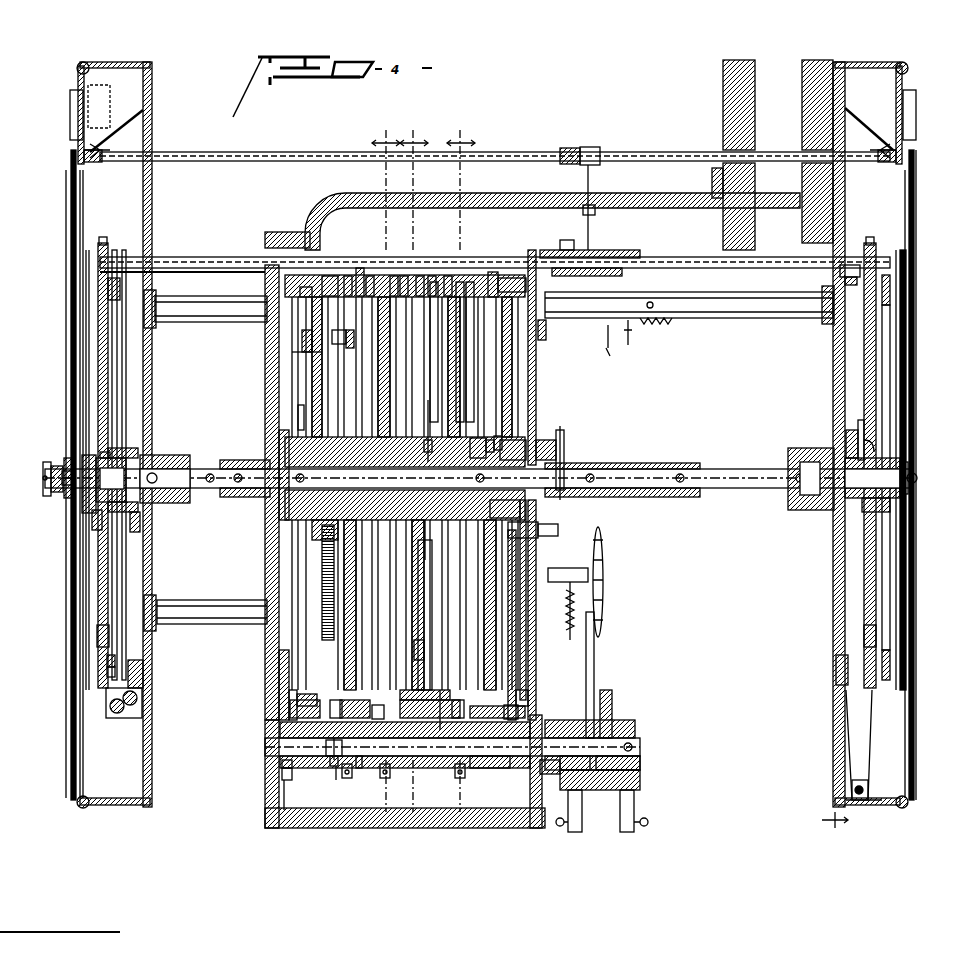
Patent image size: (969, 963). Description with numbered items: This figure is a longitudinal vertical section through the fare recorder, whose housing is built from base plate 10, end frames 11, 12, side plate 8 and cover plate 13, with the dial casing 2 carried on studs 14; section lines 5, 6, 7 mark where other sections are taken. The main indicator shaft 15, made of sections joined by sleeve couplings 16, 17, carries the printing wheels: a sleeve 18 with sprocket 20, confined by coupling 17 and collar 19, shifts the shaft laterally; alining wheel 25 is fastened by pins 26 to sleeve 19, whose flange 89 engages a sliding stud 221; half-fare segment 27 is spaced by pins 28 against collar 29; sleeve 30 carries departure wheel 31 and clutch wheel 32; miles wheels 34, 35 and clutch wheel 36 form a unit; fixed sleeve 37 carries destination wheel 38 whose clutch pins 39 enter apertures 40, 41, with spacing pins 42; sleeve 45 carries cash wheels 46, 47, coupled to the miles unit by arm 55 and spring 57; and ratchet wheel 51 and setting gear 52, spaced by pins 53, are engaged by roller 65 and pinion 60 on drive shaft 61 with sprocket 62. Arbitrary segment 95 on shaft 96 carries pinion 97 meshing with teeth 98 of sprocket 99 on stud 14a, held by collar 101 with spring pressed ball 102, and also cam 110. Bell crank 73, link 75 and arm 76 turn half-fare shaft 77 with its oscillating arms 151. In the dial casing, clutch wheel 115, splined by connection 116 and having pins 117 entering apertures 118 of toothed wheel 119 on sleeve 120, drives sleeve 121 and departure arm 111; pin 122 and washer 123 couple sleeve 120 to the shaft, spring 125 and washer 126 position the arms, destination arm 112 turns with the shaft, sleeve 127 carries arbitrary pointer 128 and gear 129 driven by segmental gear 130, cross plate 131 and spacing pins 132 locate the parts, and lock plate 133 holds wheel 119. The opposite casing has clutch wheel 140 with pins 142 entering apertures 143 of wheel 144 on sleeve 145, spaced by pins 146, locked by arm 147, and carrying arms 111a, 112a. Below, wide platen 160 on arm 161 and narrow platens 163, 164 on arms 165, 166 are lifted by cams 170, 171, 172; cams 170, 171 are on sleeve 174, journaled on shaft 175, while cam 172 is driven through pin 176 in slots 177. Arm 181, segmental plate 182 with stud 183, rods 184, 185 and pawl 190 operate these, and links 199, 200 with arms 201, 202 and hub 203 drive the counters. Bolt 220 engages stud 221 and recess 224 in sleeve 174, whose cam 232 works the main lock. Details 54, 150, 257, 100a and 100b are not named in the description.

The frame side member 2 is at (151, 728).
The section line 5 is at (465, 449).
The section line 6 is at (407, 453).
The section line 7 is at (361, 451).
The section line 8 is at (834, 836).
The base housing 10 is at (425, 812).
The housing left wall 11 is at (265, 355).
The housing right wall 12 is at (536, 368).
The tube 13 is at (540, 193).
The cross shaft 14 is at (236, 318).
The cross shaft 14a is at (760, 318).
The bearing block 15 is at (770, 465).
The main shaft 16 is at (226, 468).
The shaft sleeve 17 is at (674, 462).
The collar 18 is at (556, 448).
The collar 19 is at (476, 438).
The disc 20 is at (562, 440).
The plate 25 is at (492, 272).
The block 26 is at (505, 509).
The plate 27 is at (520, 625).
The collar 28 is at (514, 452).
The ring 29 is at (504, 436).
The plate 30 is at (426, 570).
The disc 31 is at (448, 276).
The disc 32 is at (432, 276).
The disc 34 is at (394, 276).
The disc 35 is at (370, 276).
The disc 36 is at (404, 276).
The pin 37 is at (428, 533).
The disc 38 is at (420, 276).
The disc 39 is at (464, 320).
The disc 40 is at (474, 306).
The rod 41 is at (440, 700).
The pin 42 is at (428, 410).
The hub 45 is at (325, 521).
The disc 46 is at (348, 276).
The collar 47 is at (330, 276).
The bracket 51 is at (279, 663).
The block 52 is at (304, 334).
The pin 53 is at (302, 425).
The block 54 is at (340, 330).
The disc 55 is at (440, 320).
The pawl 57 is at (350, 348).
The gear 60 is at (328, 640).
The spring bracket 61 is at (548, 572).
The gear wheel 62 is at (604, 582).
The stop 65 is at (306, 297).
The frame plate 73 is at (600, 320).
The rod 75 is at (594, 184).
The collar 76 is at (592, 148).
The upper rod 77 is at (305, 152).
The ring 89 is at (490, 440).
The post 95 is at (360, 268).
The rod 96 is at (698, 278).
The bracket 97 is at (565, 248).
The block 98 is at (546, 330).
The lever 99 is at (616, 346).
The frame end cap 100a is at (80, 66).
The frame rail 100b is at (84, 200).
The spring 101 is at (668, 322).
The screw 102 is at (630, 338).
The collar 110 is at (504, 292).
The guide rail 111 is at (74, 326).
The guide rail 111a is at (908, 382).
The guide rail 112 is at (76, 348).
The guide rail 112a is at (908, 403).
The block 115 is at (144, 674).
The bearing 116 is at (164, 470).
The slide 117 is at (118, 258).
The block 118 is at (108, 672).
The block 119 is at (108, 660).
The bearing block 120 is at (86, 455).
The knob 121 is at (40, 476).
The bracket 122 is at (136, 512).
The bracket 123 is at (120, 448).
The pin 125 is at (62, 490).
The collar 126 is at (68, 458).
The collar 127 is at (890, 504).
The column 128 is at (80, 262).
The block 129 is at (100, 632).
The cap 130 is at (103, 237).
The block 131 is at (94, 528).
The plate 132 is at (126, 452).
The clamp 133 is at (112, 706).
The block 140 is at (108, 290).
The bracket 142 is at (850, 265).
The block 143 is at (892, 288).
The rod 144 is at (892, 655).
The bearing 145 is at (908, 470).
The link 146 is at (848, 432).
The brace 147 is at (856, 760).
The brace 150 is at (128, 110).
The arrow 151 is at (104, 150).
The bar 160 is at (440, 694).
The block 161 is at (464, 712).
The block 163 is at (334, 700).
The block 164 is at (376, 705).
The pin 165 is at (360, 768).
The block 166 is at (330, 756).
The pin 170 is at (460, 778).
The pin 171 is at (385, 778).
The pin 172 is at (348, 778).
The collar 174 is at (470, 760).
The lower shaft 175 is at (636, 746).
The pin 176 is at (336, 780).
The block 177 is at (334, 766).
The post 181 is at (576, 808).
The bracket 182 is at (612, 696).
The bracket 183 is at (628, 776).
The post 184 is at (630, 820).
The pin 185 is at (582, 822).
The lever 190 is at (590, 660).
The plate 199 is at (290, 690).
The block 200 is at (298, 697).
The rod 201 is at (284, 792).
The block 202 is at (282, 764).
The block 203 is at (282, 774).
The bar 220 is at (508, 617).
The cylinder 221 is at (546, 536).
The block 224 is at (512, 690).
The collar 232 is at (540, 775).
The block 257 is at (506, 706).